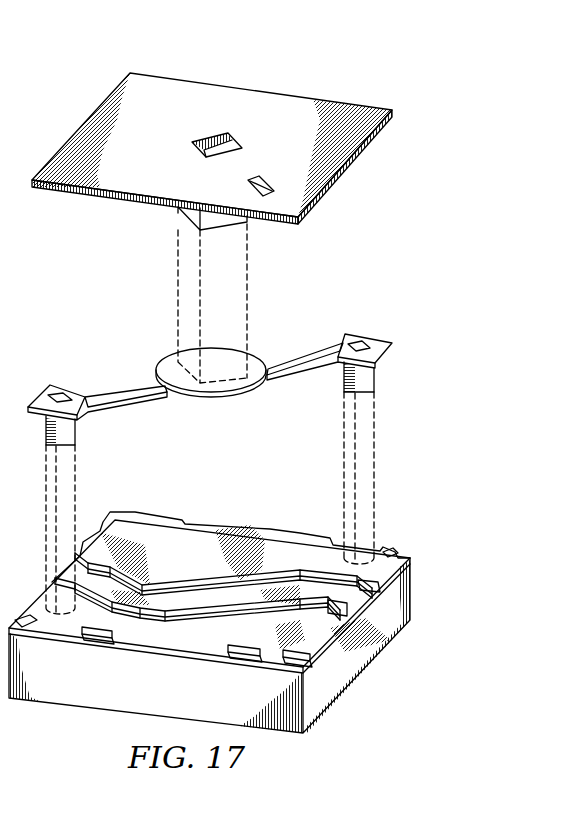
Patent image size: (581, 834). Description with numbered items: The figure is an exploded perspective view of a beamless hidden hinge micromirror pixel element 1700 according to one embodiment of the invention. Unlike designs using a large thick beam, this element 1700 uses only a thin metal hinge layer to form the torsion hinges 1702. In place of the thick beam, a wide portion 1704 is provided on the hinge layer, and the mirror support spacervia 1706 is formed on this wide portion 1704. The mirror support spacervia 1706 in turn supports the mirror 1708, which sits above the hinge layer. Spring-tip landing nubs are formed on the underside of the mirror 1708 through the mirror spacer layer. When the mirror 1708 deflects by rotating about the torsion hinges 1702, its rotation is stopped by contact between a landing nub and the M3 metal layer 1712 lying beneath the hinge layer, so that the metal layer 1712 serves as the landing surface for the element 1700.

The micromirror device assembly 1700 is at (316, 73).
The torsion hinges 1702 is at (112, 387).
The wide portion 1704 is at (170, 362).
The mirror support spacervia 1706 is at (225, 222).
The mirror 1708 is at (250, 98).
The M3 metal layer 1712 is at (216, 640).